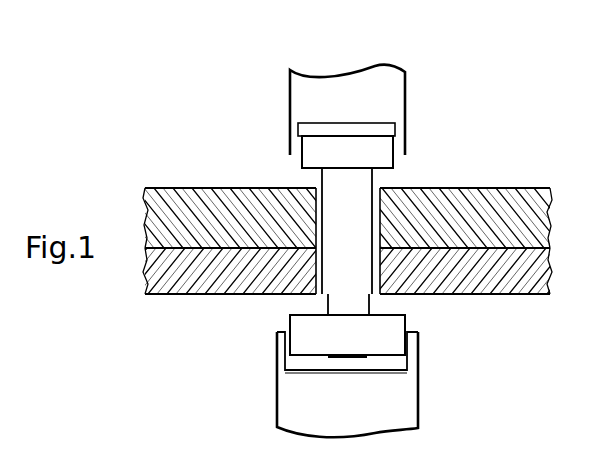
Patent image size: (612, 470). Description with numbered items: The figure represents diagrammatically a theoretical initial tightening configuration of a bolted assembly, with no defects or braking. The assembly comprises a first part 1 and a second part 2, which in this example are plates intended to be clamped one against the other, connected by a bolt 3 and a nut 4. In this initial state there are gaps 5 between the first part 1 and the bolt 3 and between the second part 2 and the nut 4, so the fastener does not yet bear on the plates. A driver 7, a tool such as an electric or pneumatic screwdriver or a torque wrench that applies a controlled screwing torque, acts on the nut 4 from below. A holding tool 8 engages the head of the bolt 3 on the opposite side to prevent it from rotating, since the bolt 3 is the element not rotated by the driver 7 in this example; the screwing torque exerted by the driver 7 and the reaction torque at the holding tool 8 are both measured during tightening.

The first part 1 is at (190, 205).
The second part 2 is at (193, 278).
The bolt 3 is at (345, 150).
The nut 4 is at (350, 340).
The gaps 5 is at (290, 315).
The driver 7 is at (403, 400).
The holding tool 8 is at (391, 77).